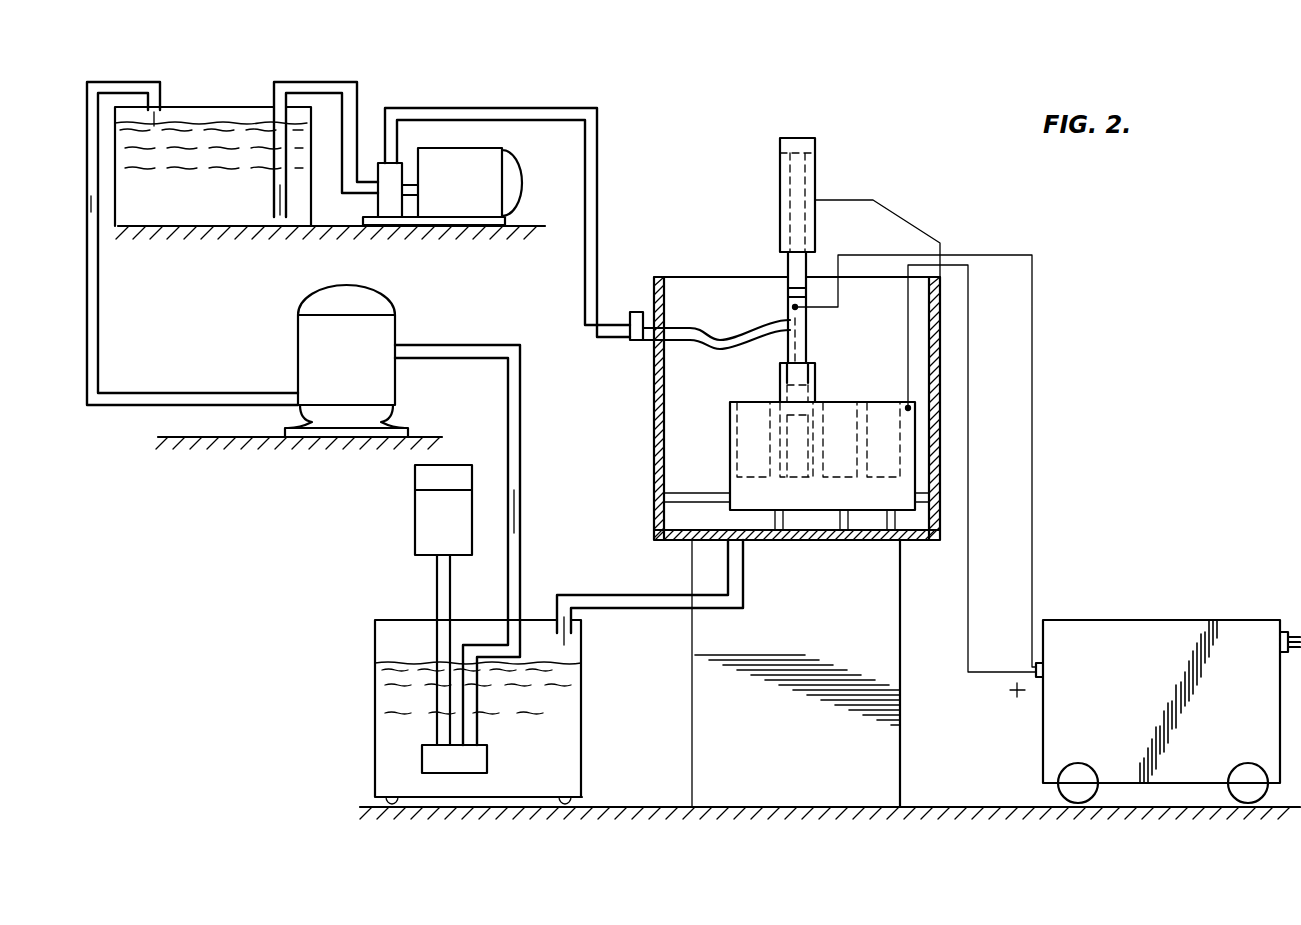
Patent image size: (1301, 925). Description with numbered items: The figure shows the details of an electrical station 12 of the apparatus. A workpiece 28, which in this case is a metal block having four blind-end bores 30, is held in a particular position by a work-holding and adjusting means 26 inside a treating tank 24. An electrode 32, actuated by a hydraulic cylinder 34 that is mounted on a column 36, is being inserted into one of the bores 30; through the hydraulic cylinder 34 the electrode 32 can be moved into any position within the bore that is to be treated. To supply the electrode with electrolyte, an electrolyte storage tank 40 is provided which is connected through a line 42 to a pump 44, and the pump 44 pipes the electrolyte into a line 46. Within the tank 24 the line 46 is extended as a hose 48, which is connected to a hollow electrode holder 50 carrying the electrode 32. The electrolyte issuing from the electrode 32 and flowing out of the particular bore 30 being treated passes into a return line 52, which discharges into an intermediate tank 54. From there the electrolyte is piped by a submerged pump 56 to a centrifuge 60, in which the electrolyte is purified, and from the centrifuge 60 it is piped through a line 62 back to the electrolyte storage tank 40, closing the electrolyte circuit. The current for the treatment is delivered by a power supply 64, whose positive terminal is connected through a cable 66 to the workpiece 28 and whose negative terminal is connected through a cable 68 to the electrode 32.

The electrical station 12 is at (661, 204).
The treating tank 24 is at (942, 373).
The work-holding and adjusting means 26 is at (836, 520).
The workpiece 28 is at (893, 495).
The blind-end bores 30 is at (893, 447).
The electrode 32 is at (813, 380).
The hydraulic cylinder 34 is at (797, 188).
The column 36 is at (895, 230).
The electrolyte storage tank 40 is at (205, 123).
The line 42 is at (345, 93).
The pump 44 is at (462, 164).
The line 46 is at (591, 191).
The hose 48 is at (692, 328).
The hollow electrode holder 50 is at (808, 339).
The return line 52 is at (677, 605).
The intermediate tank 54 is at (386, 687).
The submerged pump 56 is at (425, 521).
The centrifuge 60 is at (378, 338).
The line 62 is at (92, 311).
The power supply 64 is at (1132, 634).
The cable 66 is at (968, 612).
The cable 68 is at (1031, 383).